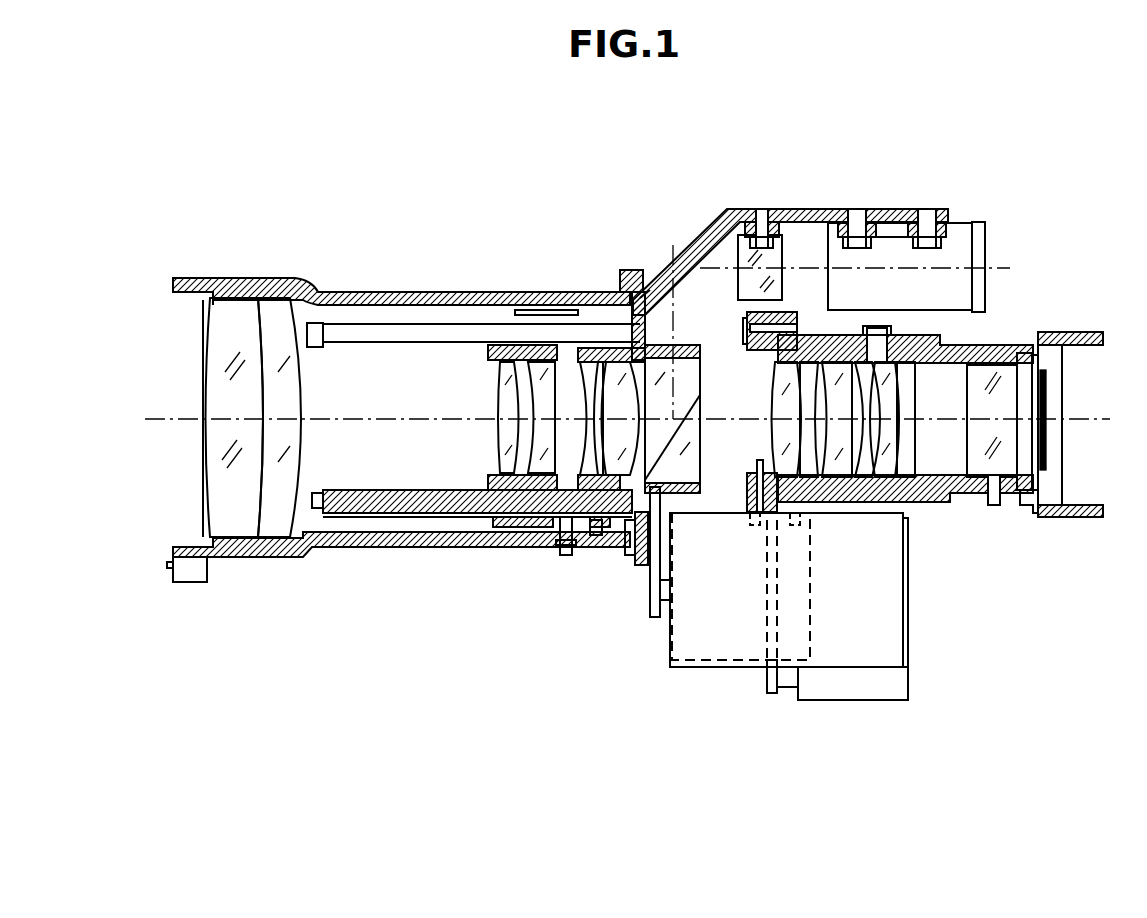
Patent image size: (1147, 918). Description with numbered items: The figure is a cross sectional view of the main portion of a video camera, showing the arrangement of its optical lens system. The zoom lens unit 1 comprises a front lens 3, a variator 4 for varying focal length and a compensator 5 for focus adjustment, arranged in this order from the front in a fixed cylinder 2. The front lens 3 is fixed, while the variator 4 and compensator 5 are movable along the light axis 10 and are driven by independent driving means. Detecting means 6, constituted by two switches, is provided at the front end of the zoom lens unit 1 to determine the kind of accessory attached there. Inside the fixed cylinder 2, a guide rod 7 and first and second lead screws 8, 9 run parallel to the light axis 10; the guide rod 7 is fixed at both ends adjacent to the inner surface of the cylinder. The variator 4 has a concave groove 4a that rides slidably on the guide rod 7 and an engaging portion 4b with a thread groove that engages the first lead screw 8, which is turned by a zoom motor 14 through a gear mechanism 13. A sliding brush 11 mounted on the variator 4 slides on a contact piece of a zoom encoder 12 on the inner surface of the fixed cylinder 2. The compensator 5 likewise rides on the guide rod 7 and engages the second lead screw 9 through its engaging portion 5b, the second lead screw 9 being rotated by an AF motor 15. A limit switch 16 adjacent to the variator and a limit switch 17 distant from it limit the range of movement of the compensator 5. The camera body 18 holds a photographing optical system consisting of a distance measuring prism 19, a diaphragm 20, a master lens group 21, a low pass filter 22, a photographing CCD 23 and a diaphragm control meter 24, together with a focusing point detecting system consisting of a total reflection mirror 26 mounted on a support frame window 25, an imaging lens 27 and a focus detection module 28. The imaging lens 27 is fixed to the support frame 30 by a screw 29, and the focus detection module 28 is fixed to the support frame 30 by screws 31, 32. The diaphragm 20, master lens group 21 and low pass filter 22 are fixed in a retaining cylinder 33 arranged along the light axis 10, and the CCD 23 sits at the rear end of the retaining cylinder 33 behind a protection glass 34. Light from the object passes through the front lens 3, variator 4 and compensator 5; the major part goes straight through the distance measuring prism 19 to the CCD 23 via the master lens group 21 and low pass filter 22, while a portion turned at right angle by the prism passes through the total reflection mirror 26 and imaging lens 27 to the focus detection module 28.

The zoom lens unit 1 is at (318, 288).
The fixed cylinder 2 is at (340, 292).
The front lens 3 is at (237, 557).
The variator 4 is at (505, 352).
The concave groove 4a is at (500, 345).
The engaging portion 4b is at (480, 490).
The compensator 5 is at (593, 348).
The engaging portion 5b is at (600, 547).
The detecting means 6 is at (192, 573).
The guide rod 7 is at (373, 330).
The first lead screw 8 is at (460, 537).
The second lead screw 9 is at (353, 537).
The light axis 10 is at (408, 413).
The sliding brush 11 is at (547, 305).
The zoom encoder 12 is at (487, 345).
The gear mechanism 13 is at (650, 610).
The zoom motor 14 is at (893, 648).
The AF motor 15 is at (720, 643).
The limit switch 16 is at (560, 567).
The limit switch 17 is at (613, 563).
The camera body 18 is at (879, 153).
The distance measuring prism 19 is at (668, 470).
The diaphragm 20 is at (753, 467).
The master lens group 21 is at (907, 463).
The low pass filter 22 is at (1002, 463).
The photographing CCD 23 is at (1045, 433).
The diaphragm control meter 24 is at (887, 685).
The support frame window 25 is at (700, 233).
The total reflection mirror 26 is at (680, 248).
The imaging lens 27 is at (787, 247).
The focus detection module 28 is at (893, 240).
The screw 29 is at (763, 217).
The support frame 30 is at (830, 220).
The screw 31 is at (857, 217).
The screw 32 is at (930, 217).
The retaining cylinder 33 is at (970, 343).
The protection glass 34 is at (1043, 380).